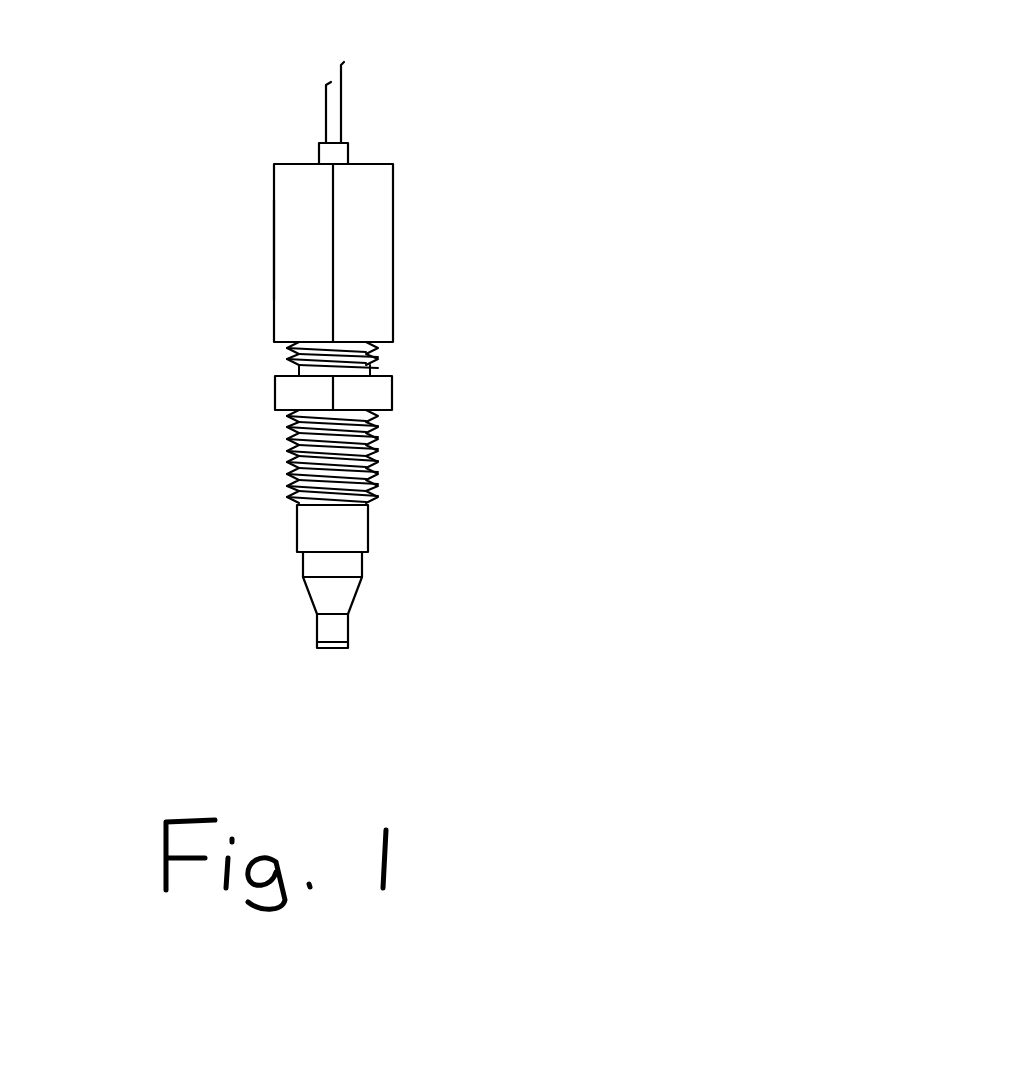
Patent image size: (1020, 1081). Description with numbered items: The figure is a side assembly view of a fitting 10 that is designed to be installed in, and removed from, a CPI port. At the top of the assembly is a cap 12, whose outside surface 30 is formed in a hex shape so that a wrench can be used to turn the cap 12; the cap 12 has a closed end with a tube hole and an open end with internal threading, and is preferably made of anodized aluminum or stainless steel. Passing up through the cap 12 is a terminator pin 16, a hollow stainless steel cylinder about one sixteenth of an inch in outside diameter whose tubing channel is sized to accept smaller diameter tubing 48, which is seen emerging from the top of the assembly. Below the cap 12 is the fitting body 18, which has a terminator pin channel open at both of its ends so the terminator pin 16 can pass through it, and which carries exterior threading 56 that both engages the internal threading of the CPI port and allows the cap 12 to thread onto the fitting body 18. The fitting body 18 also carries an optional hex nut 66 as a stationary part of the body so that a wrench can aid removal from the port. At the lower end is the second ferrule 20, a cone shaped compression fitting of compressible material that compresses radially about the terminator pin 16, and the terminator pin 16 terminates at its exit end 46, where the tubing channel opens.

The fitting 10 is at (782, 359).
The cap 12 is at (505, 195).
The terminator pin 16 is at (555, 100).
The fitting body 18 is at (547, 340).
The second ferrule 20 is at (477, 568).
The outside surface 30 is at (310, 250).
The exit end 46 is at (472, 632).
The smaller diameter tubing 48 is at (427, 47).
The exterior threading 56 is at (445, 452).
The hex nut 66 is at (490, 390).